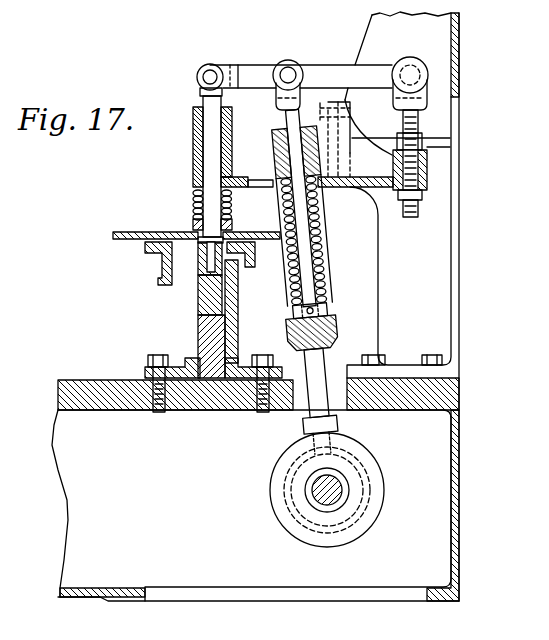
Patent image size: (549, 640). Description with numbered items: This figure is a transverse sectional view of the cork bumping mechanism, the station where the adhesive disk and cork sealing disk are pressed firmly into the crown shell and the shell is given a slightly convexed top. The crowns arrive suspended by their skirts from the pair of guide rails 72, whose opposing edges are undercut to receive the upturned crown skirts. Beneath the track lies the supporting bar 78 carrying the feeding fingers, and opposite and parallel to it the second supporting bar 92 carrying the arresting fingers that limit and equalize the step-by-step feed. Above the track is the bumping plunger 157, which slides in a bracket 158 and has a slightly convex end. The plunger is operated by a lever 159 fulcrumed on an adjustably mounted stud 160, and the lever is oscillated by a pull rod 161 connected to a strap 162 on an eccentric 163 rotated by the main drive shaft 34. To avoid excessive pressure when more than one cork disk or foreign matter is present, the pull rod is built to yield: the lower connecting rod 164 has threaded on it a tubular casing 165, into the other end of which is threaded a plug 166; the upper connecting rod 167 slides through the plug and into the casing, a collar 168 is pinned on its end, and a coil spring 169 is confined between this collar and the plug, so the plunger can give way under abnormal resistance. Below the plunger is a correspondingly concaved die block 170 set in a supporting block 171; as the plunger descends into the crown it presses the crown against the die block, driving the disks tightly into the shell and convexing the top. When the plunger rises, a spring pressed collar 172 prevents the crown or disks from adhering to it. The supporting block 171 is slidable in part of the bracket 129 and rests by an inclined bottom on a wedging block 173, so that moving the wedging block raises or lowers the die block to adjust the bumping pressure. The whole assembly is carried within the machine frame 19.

The frame housing 19 is at (461, 450).
The main drive shaft 34 is at (318, 488).
The guide rails 72 is at (237, 234).
The supporting bar 78 is at (160, 269).
The second supporting bar 92 is at (256, 263).
The bracket 129 is at (239, 348).
The bumping plunger 157 is at (210, 180).
The bracket 158 is at (193, 146).
The lever 159 is at (263, 58).
The stud 160 is at (413, 128).
The pull rod 161 is at (325, 207).
The strap 162 is at (368, 456).
The eccentric 163 is at (369, 502).
The lower connecting rod 164 is at (312, 403).
The tubular casing 165 is at (296, 307).
The plug 166 is at (279, 162).
The upper connecting rod 167 is at (290, 118).
The collar 168 is at (327, 311).
The coil spring 169 is at (326, 218).
The die block 170 is at (201, 247).
The supporting block 171 is at (198, 297).
The spring pressed collar 172 is at (193, 211).
The wedging block 173 is at (198, 333).